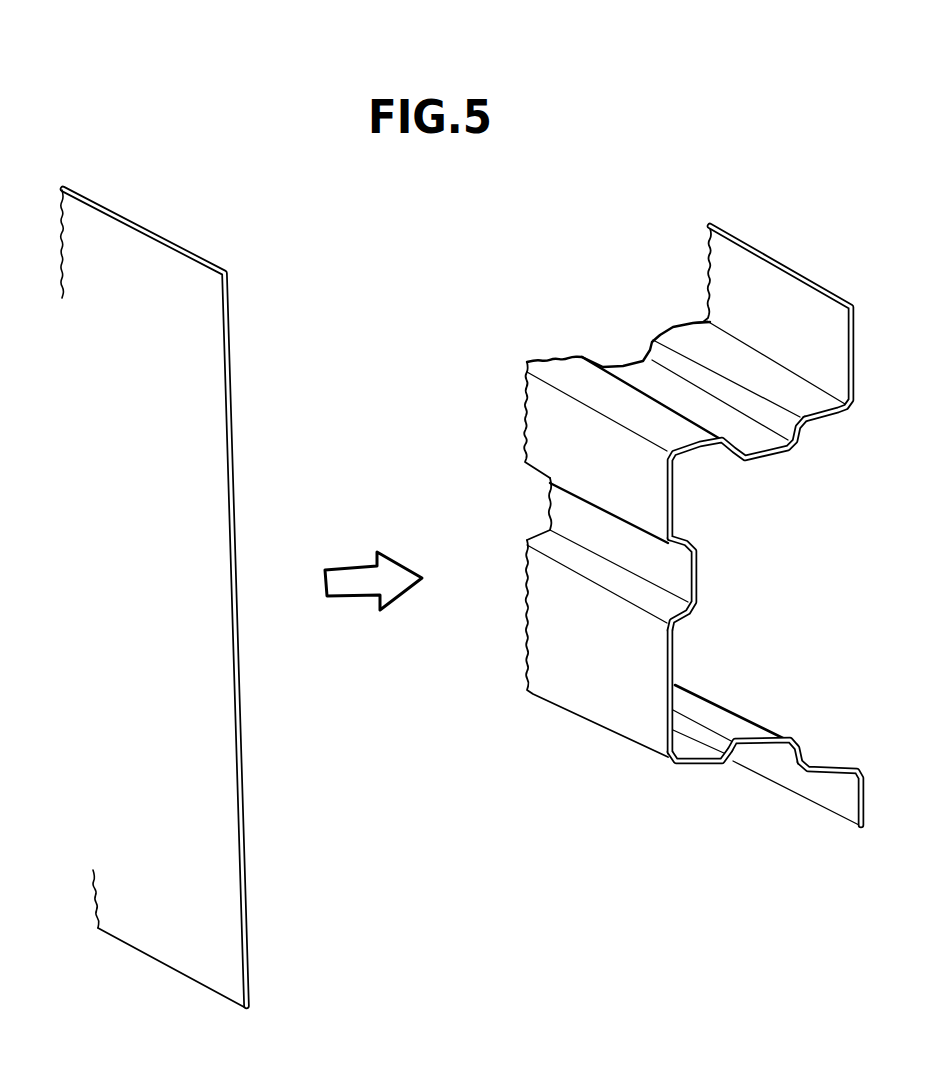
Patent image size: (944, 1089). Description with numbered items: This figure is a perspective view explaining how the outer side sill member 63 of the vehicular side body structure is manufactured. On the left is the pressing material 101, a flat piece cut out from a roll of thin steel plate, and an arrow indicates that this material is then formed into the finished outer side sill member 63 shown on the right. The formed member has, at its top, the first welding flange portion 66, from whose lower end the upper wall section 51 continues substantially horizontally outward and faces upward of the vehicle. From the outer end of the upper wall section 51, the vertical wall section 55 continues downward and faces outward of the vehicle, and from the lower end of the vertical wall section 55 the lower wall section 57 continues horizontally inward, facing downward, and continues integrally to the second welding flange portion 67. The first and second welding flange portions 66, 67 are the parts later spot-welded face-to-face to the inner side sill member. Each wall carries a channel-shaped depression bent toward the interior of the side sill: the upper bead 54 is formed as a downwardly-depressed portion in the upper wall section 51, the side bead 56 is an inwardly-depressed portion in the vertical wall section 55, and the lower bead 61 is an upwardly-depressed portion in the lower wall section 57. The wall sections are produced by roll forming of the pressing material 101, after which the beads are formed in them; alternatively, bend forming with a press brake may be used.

The pressing material 101 is at (160, 212).
The outer side sill member 63 is at (560, 328).
The upper wall section 51 is at (558, 372).
The upper bead 54 is at (642, 373).
The first welding flange portion 66 is at (760, 280).
The side bead 56 is at (563, 512).
The vertical wall section 55 is at (543, 634).
The lower wall section 57 is at (695, 767).
The lower bead 61 is at (748, 745).
The second welding flange portion 67 is at (825, 793).